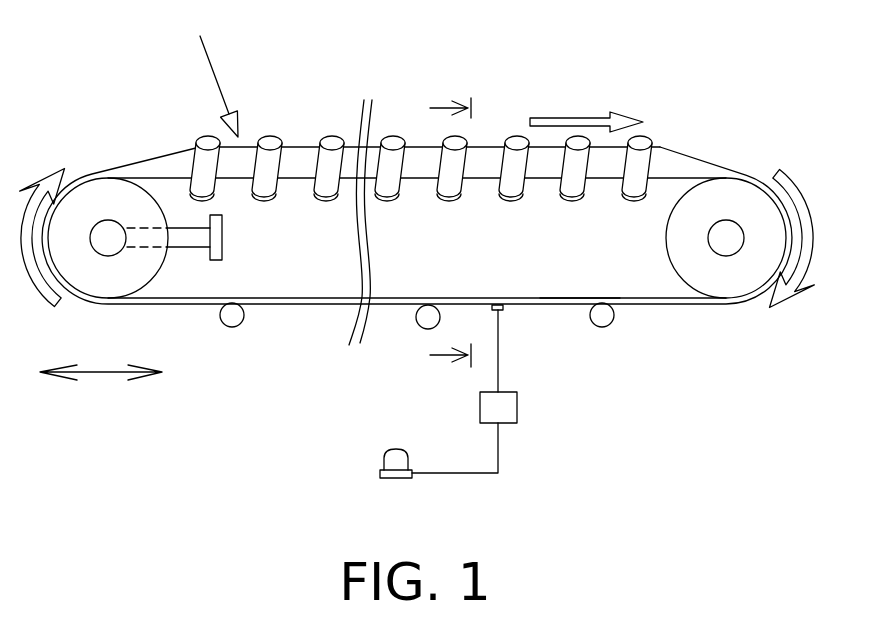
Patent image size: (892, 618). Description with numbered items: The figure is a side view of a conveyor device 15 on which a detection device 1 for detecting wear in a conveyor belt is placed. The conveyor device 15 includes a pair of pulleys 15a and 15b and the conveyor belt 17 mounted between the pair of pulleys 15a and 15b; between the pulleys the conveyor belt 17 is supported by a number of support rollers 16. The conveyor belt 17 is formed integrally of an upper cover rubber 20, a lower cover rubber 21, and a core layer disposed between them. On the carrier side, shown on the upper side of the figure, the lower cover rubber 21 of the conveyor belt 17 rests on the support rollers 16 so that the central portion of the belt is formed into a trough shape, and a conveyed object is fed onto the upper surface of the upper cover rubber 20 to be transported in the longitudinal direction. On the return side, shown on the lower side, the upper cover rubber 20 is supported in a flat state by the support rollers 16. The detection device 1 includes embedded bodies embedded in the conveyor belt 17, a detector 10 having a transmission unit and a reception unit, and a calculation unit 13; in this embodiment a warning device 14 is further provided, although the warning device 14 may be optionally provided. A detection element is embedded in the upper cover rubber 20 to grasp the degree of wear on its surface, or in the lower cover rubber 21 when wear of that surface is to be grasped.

The detection device 1 is at (417, 241).
The detector 10 is at (502, 311).
The calculation unit 13 is at (518, 409).
The warning device 14 is at (390, 462).
The conveyor device 15 is at (417, 214).
The pulley 15a is at (735, 198).
The pulley 15b is at (83, 203).
The support rollers 16 is at (517, 138).
The conveyor belt 17 is at (304, 152).
The upper cover rubber 20 is at (304, 306).
The lower cover rubber 21 is at (572, 297).